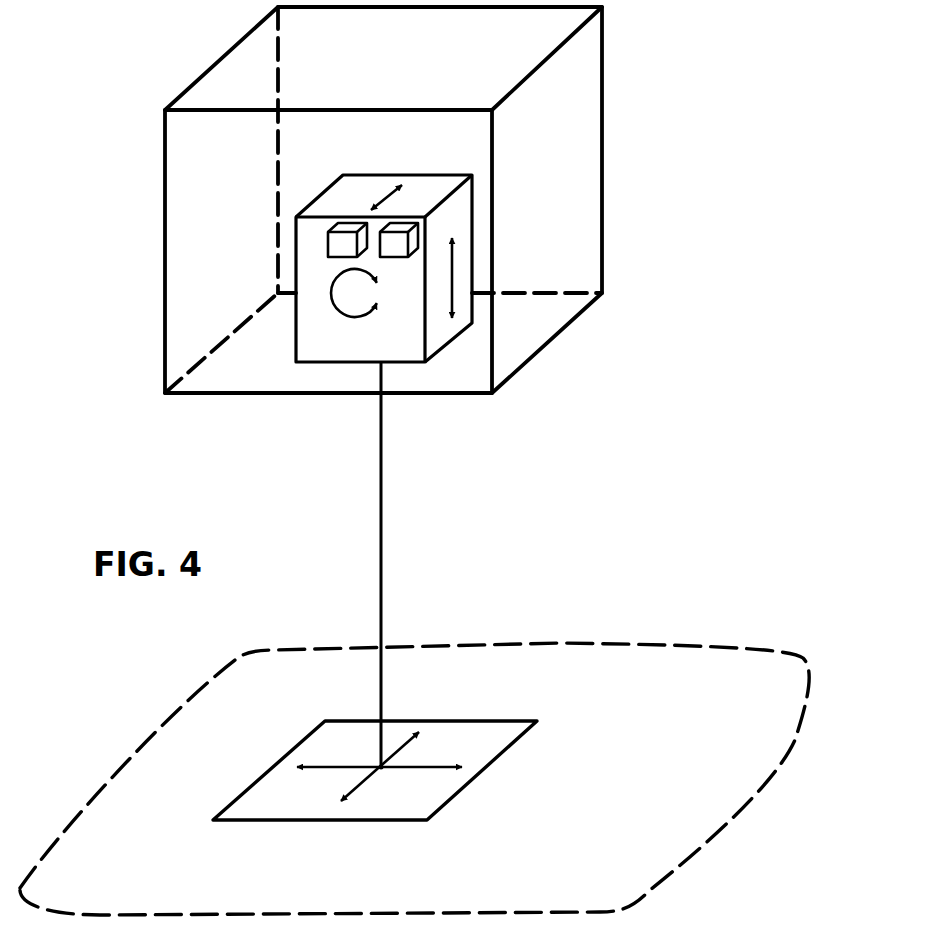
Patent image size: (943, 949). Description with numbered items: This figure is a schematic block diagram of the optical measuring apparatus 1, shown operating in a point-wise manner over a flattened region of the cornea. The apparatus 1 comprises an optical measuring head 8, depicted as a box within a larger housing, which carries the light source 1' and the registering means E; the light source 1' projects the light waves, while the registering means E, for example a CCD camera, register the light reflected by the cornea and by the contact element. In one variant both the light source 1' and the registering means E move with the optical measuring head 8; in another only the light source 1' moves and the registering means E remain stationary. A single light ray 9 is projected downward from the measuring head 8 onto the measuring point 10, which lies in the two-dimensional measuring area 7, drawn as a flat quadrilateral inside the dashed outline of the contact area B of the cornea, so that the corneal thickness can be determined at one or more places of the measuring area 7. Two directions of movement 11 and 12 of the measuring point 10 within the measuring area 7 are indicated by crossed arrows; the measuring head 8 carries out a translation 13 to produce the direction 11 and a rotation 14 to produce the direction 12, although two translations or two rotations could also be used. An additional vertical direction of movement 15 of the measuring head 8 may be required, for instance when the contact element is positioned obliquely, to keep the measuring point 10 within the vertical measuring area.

The optical measuring apparatus 1 is at (327, 200).
The light source 1' is at (206, 266).
The registering means E is at (397, 243).
The optical measuring head 8 is at (405, 362).
The light ray 9 is at (381, 567).
The measuring area 7 is at (387, 817).
The measuring point 10 is at (382, 768).
The direction of movement 11 is at (360, 780).
The direction of movement 12 is at (418, 766).
The translation 13 is at (385, 200).
The rotation 14 is at (340, 315).
The vertical direction of movement 15 is at (452, 278).
The contact area B is at (745, 800).